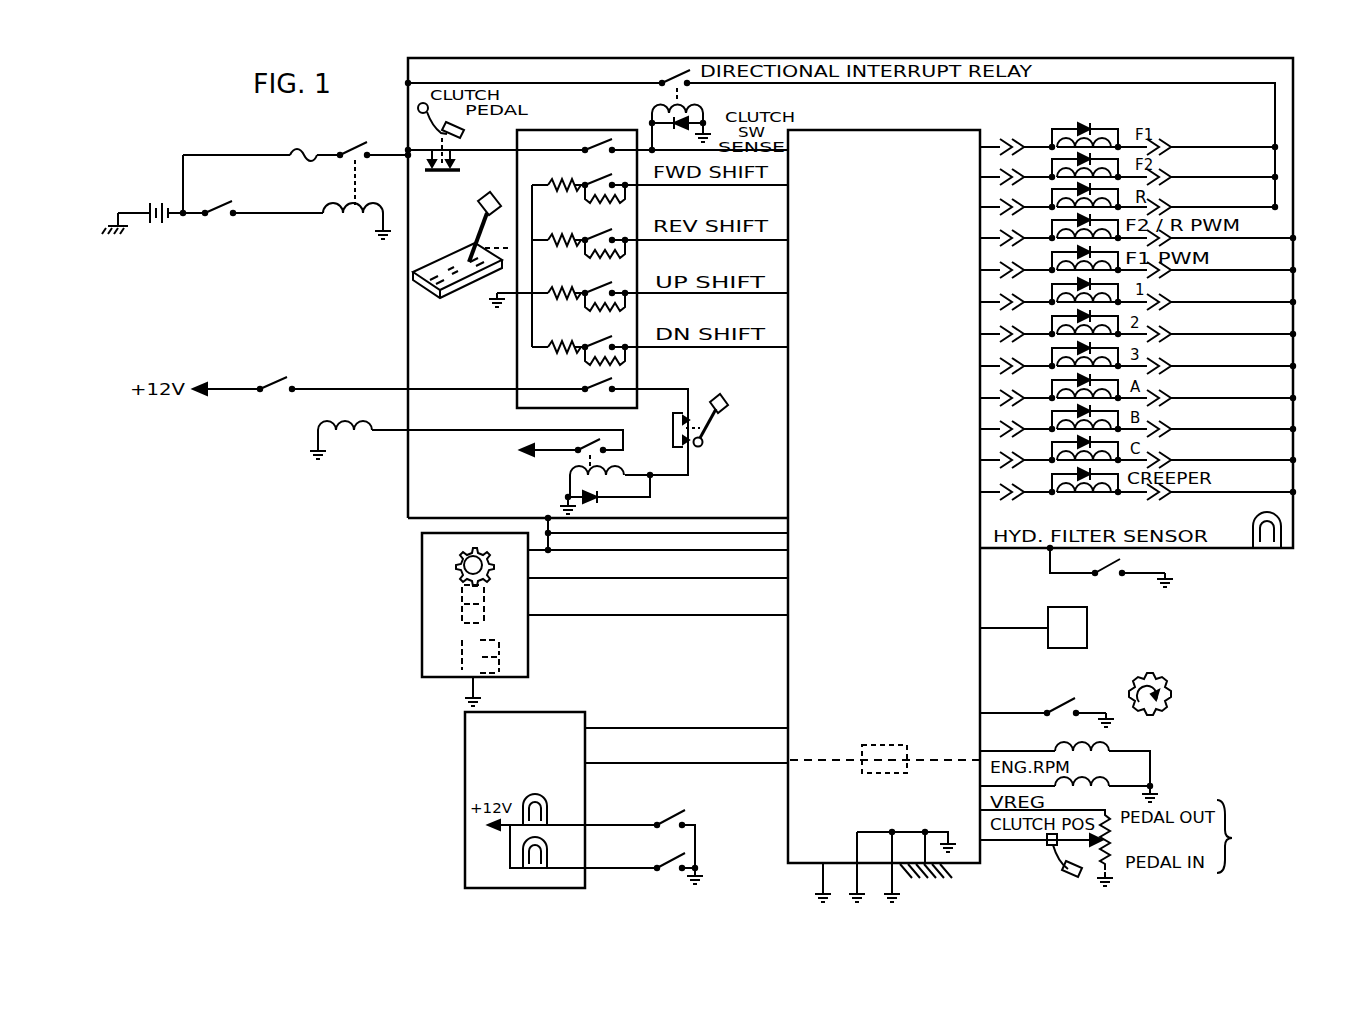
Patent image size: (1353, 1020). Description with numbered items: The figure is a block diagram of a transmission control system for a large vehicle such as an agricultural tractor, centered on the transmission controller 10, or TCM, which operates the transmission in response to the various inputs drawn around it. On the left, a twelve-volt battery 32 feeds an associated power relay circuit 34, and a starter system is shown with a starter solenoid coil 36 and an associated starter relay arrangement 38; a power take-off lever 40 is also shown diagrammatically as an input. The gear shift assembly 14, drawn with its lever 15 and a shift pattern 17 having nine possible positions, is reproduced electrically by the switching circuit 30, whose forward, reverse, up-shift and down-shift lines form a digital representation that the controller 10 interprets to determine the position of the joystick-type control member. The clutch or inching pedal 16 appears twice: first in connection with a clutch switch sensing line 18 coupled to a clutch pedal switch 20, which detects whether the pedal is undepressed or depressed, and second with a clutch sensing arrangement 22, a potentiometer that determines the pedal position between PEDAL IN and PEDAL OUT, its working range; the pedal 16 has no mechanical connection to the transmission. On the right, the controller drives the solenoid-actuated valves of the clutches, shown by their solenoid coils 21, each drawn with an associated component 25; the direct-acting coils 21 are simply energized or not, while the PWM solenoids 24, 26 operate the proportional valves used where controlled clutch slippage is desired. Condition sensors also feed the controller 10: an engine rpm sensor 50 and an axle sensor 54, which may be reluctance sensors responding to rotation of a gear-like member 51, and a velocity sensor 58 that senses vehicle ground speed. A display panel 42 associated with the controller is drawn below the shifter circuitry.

The transmission controller 10 is at (883, 428).
The gear shift lever 14 is at (462, 276).
The shift lever 15 is at (465, 226).
The clutch pedal 16 is at (418, 112).
The shift pattern 17 is at (427, 293).
The clutch switch sensing line 18 is at (506, 158).
The clutch pedal switch 20 is at (456, 176).
The solenoid coils 21 is at (1138, 309).
The second clutch sensing arrangement 22 is at (1228, 789).
The PWM solenoid 24 is at (982, 232).
The diode 25 is at (1085, 124).
The PWM solenoid 26 is at (982, 263).
The switching circuit 30 is at (517, 360).
The battery 32 is at (160, 228).
The power relay circuit 34 is at (283, 240).
The starter solenoid coil 36 is at (355, 466).
The starter relay arrangement 38 is at (664, 485).
The power take-off lever 40 is at (710, 435).
The display panel 42 is at (416, 638).
The engine rpm sensor 50 is at (1098, 784).
The gear-like member 51 is at (1160, 678).
The axle sensor 54 is at (1120, 748).
The velocity sensor 58 is at (1087, 633).